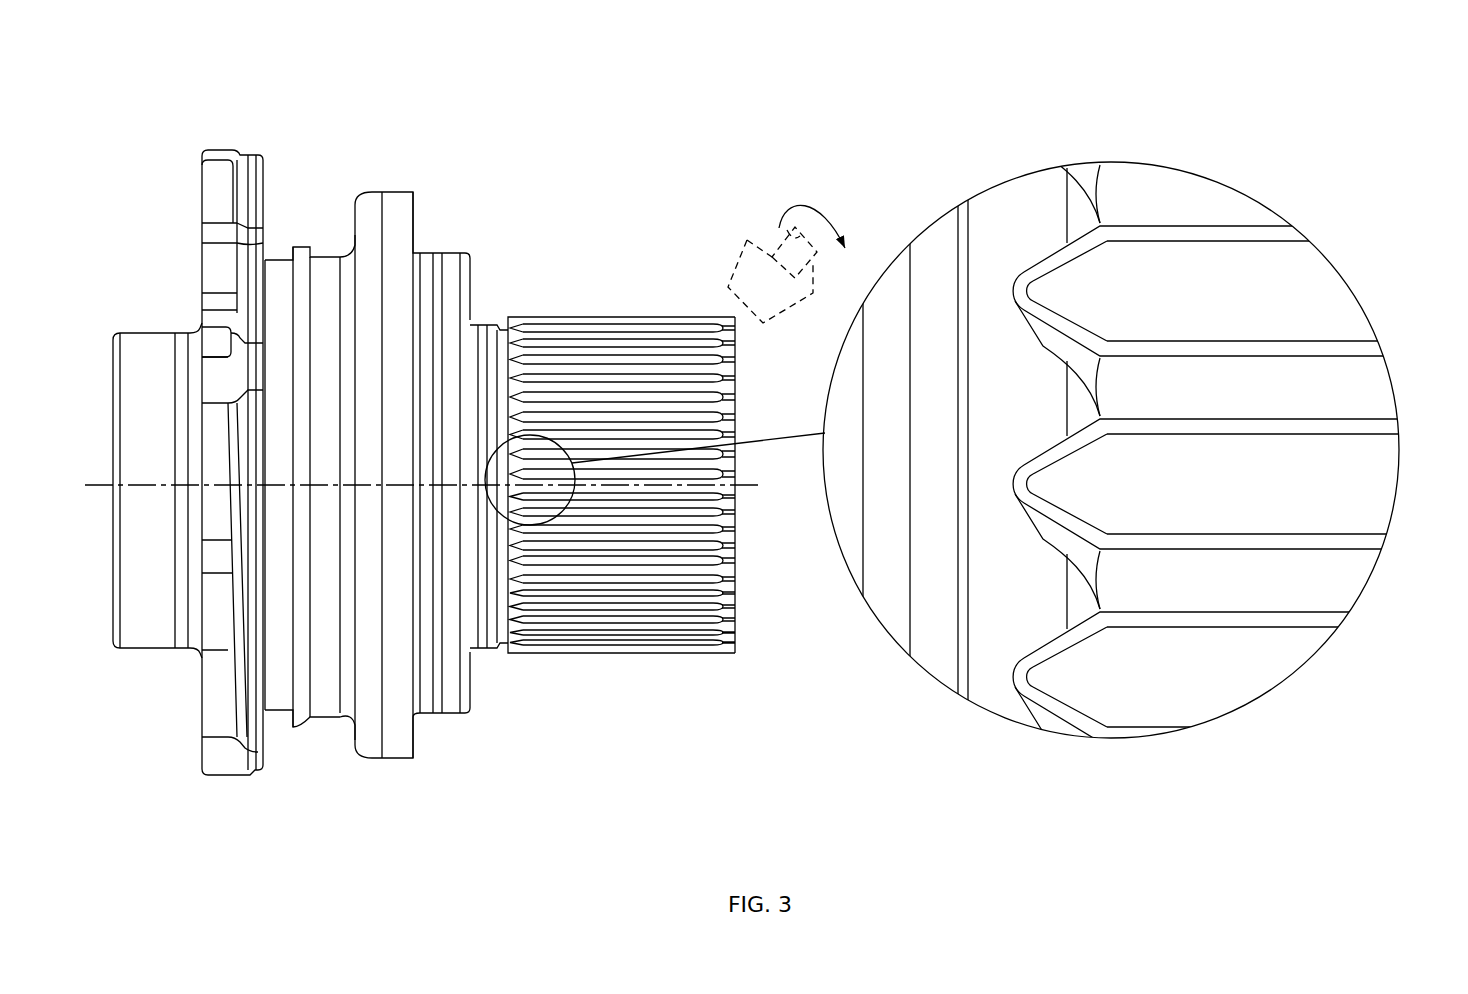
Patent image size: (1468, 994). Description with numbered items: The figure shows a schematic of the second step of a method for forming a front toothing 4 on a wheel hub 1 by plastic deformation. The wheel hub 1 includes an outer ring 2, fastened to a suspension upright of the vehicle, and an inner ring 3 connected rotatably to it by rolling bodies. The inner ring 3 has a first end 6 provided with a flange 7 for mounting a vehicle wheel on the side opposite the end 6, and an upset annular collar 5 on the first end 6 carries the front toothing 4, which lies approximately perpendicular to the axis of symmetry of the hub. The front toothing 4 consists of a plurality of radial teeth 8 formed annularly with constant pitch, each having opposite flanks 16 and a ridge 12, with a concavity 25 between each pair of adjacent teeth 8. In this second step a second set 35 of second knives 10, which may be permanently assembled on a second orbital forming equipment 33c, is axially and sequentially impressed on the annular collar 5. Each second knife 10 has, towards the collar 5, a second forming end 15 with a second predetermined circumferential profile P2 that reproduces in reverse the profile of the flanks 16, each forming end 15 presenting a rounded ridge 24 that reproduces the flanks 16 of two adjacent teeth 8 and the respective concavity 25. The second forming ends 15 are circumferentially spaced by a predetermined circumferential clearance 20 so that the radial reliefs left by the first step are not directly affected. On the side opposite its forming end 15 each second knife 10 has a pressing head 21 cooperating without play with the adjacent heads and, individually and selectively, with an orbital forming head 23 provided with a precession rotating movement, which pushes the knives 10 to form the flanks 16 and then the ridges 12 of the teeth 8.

The wheel hub 1 is at (360, 116).
The outer ring 2 is at (322, 268).
The inner ring 3 is at (481, 645).
The front toothing 4 is at (1039, 217).
The annular collar 5 is at (488, 323).
The first end 6 is at (522, 676).
The flange 7 is at (215, 677).
The radial teeth 8 is at (1050, 203).
The second knives 10 is at (682, 388).
The ridges 12 is at (1091, 408).
The second forming ends 15 is at (527, 455).
The flanks 16 is at (1039, 351).
The circumferential clearance 20 is at (1372, 376).
The pressing head 21 is at (738, 350).
The orbital forming head 23 is at (759, 246).
The rounded ridge 24 is at (1011, 286).
The concavity 25 is at (1022, 303).
The second orbital forming equipment 33c is at (836, 103).
The second set 35 is at (761, 651).
The second predetermined circumferential profile P2 is at (957, 222).